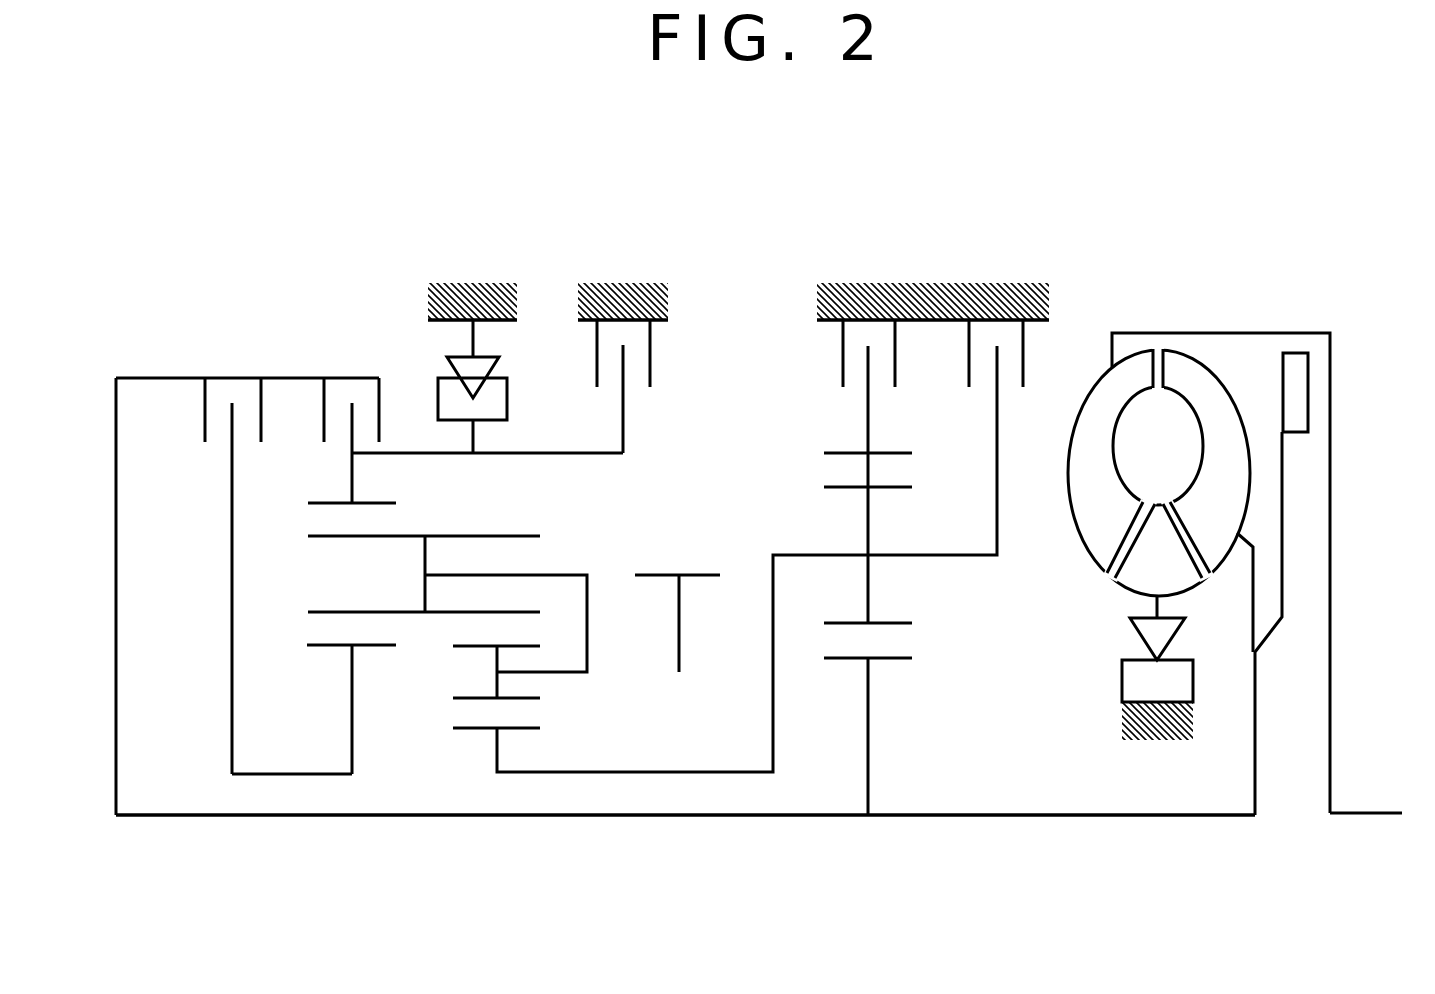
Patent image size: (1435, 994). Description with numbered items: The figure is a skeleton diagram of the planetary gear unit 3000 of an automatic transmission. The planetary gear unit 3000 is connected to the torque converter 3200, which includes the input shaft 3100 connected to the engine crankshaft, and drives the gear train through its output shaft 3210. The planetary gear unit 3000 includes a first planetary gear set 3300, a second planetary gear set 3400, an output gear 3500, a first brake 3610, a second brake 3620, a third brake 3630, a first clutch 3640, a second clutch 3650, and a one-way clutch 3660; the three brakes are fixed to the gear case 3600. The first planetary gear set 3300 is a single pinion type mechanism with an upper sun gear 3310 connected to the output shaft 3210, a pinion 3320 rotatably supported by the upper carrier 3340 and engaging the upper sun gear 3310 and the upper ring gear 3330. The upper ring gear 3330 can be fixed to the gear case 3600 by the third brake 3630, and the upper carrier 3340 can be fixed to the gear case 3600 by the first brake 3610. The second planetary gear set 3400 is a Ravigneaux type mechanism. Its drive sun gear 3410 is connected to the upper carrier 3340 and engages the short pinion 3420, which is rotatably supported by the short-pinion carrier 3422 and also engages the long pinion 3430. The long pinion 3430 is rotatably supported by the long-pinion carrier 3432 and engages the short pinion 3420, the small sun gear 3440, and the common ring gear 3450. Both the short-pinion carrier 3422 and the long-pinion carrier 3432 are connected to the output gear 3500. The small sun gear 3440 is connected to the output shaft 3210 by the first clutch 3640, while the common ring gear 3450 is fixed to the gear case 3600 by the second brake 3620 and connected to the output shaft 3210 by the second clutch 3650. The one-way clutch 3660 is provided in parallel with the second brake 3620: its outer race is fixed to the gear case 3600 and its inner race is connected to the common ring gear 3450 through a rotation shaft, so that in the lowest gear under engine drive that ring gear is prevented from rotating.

The planetary gear unit 3000 is at (737, 230).
The input shaft 3100 is at (1365, 815).
The torque converter 3200 is at (1192, 304).
The output shaft 3210 is at (1022, 812).
The first planetary gear set 3300 is at (867, 837).
The sun gear S (UD) 3310 is at (883, 697).
The pinion 3320 is at (906, 613).
The ring gear R (UD) 3330 is at (884, 451).
The carrier C (UD) 3340 is at (997, 522).
The second planetary gear set 3400 is at (493, 835).
The sun gear S (D) 3410 is at (549, 727).
The short pinion 3420 is at (446, 655).
The carrier C (1) 3422 is at (563, 673).
The long pinion 3430 is at (533, 527).
The carrier C (2) 3432 is at (512, 575).
The sun gear S (S) 3440 is at (330, 653).
The ring gear R (1) (R (2)) 3450 is at (373, 483).
The output gear 3500 is at (716, 561).
The gear case 3600 is at (470, 282).
The B1 brake 3610 is at (1017, 398).
The B2 brake 3620 is at (646, 391).
The B3 brake 3630 is at (835, 387).
The C1 clutch 3640 is at (193, 419).
The C2 clutch 3650 is at (310, 419).
The one-way clutch F 3660 is at (430, 358).